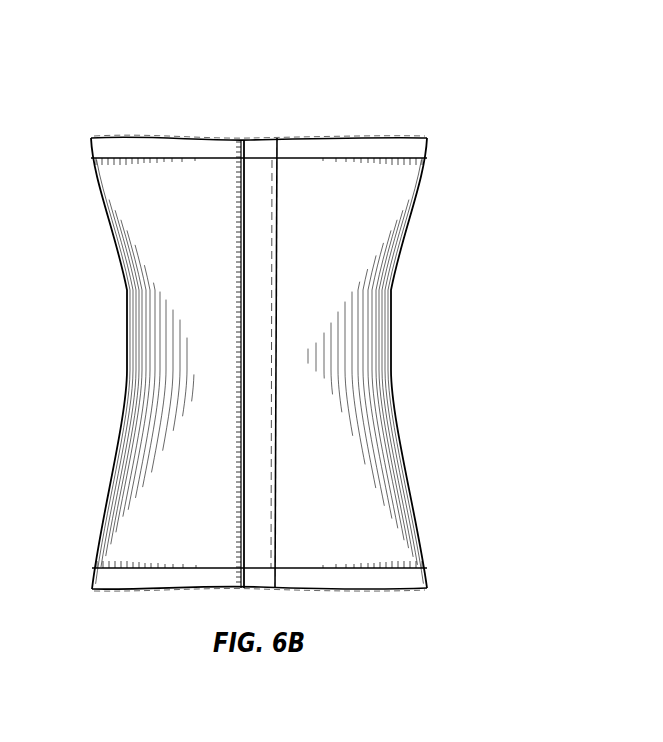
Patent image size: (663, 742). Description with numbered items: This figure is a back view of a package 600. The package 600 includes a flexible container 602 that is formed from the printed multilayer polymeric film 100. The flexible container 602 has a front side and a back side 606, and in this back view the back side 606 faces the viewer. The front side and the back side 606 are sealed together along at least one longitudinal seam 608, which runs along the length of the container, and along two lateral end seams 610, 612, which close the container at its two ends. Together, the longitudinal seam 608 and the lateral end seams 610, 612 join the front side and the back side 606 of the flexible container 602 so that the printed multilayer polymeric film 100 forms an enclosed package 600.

The package 600 is at (403, 95).
The flexible container 602 is at (412, 230).
The back side 606 is at (380, 442).
The longitudinal seam 608 is at (263, 210).
The lateral end seam 610 is at (413, 150).
The lateral end seam 612 is at (413, 578).
The printed multilayer polymeric film 100 is at (138, 493).